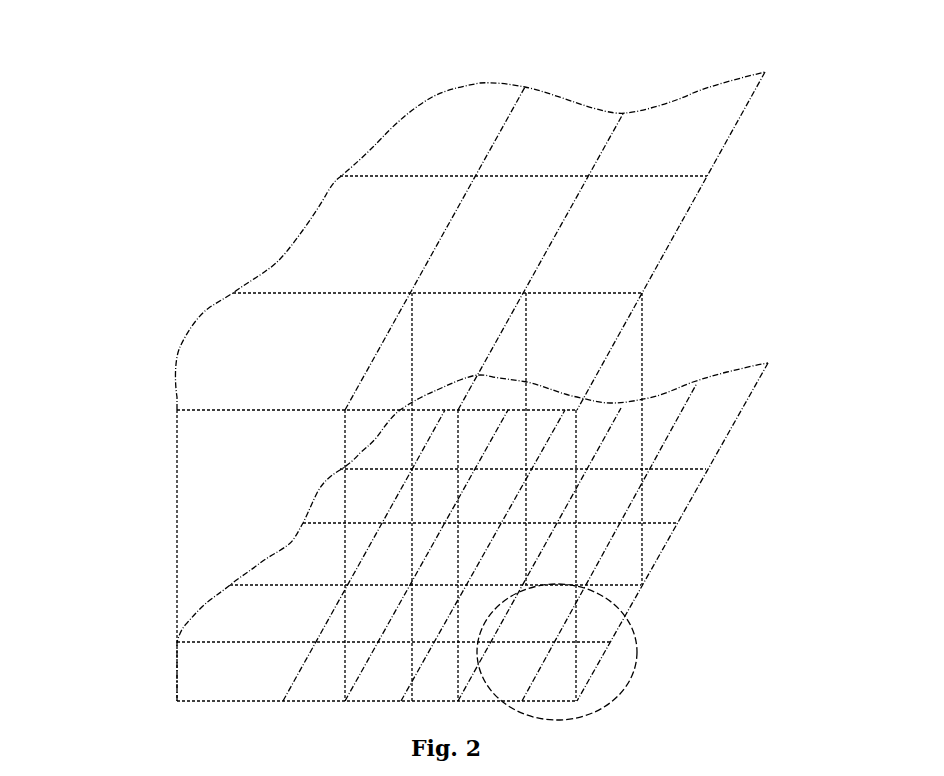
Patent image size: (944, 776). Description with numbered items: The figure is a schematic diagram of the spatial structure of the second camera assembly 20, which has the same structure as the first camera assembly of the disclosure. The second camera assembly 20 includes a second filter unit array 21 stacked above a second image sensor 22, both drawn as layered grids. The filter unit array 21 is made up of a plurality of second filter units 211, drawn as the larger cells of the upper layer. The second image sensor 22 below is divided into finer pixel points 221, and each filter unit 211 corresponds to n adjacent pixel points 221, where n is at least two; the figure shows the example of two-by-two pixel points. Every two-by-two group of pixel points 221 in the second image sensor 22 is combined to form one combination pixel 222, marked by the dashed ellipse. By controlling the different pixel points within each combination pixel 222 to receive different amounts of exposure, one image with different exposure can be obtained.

The second camera assembly 20 is at (449, 51).
The second filter unit array 21 is at (517, 386).
The second filter unit 211 is at (586, 326).
The second image sensor 22 is at (395, 541).
The pixel point 221 is at (618, 609).
The combination pixel 222 is at (651, 664).